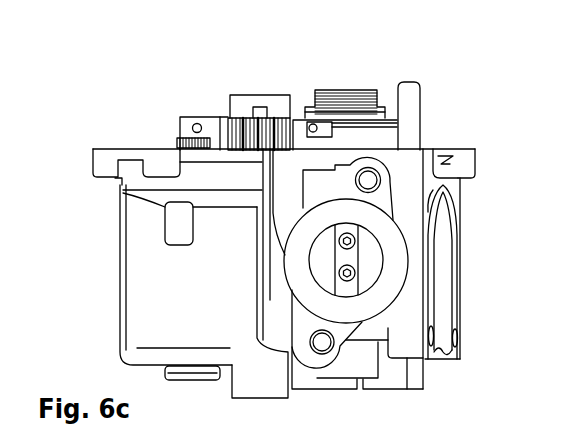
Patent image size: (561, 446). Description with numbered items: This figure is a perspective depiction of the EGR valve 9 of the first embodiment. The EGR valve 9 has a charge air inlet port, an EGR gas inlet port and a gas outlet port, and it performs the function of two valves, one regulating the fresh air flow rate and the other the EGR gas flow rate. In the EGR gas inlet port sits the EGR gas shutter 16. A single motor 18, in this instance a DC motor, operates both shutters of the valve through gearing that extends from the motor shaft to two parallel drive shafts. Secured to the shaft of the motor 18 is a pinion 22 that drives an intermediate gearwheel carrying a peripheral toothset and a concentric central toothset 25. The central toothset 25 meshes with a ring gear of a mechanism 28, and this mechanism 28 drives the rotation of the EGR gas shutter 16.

The EGR valve 9 is at (449, 102).
The EGR gas shutter 16 is at (366, 262).
The motor 18 is at (160, 272).
The pinion 22 is at (181, 142).
The central toothset 25 is at (236, 133).
The mechanism 28 is at (302, 100).